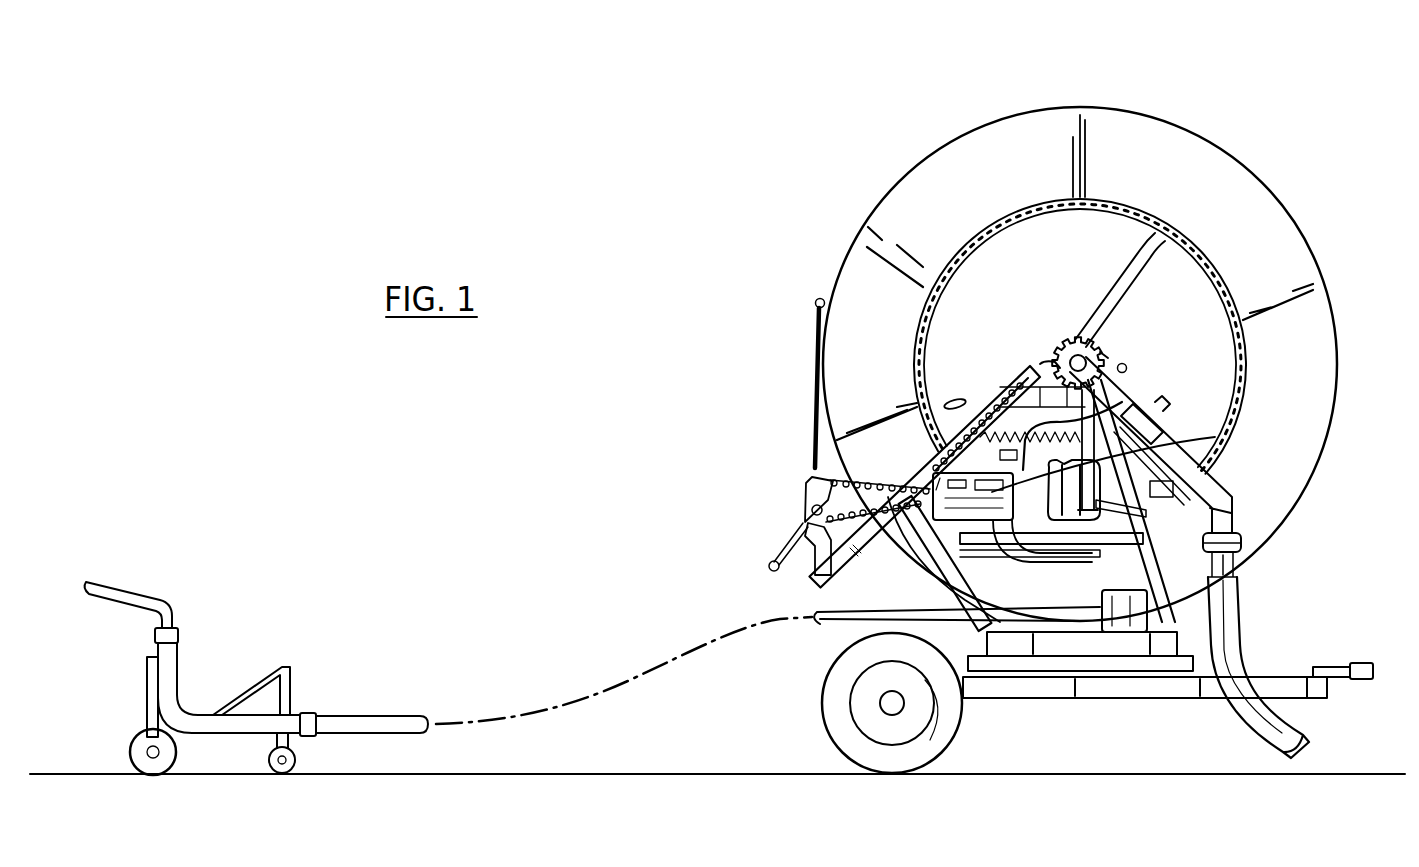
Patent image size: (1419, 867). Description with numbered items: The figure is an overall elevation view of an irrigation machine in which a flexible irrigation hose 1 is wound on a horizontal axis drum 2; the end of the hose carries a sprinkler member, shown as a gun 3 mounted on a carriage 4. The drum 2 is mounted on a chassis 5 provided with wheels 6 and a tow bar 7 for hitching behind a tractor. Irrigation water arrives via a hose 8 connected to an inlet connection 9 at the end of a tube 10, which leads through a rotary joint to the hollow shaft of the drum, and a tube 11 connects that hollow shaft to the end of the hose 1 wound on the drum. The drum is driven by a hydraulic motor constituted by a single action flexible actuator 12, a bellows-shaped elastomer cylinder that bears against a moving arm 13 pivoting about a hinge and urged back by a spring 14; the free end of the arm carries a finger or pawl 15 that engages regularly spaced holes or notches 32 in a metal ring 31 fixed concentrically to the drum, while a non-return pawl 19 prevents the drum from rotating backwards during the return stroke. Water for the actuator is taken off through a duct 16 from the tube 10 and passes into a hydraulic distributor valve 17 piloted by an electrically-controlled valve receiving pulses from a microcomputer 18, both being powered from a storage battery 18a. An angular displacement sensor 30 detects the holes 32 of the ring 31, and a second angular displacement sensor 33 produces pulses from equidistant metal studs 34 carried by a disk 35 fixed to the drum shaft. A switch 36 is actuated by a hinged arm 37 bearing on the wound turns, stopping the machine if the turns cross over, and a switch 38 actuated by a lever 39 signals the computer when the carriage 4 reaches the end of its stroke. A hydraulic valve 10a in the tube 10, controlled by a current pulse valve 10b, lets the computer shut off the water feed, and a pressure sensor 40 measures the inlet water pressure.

The flexible irrigation hose 1 is at (354, 720).
The horizontal axis drum 2 is at (1065, 130).
The gun 3 is at (137, 596).
The carriage 4 is at (150, 695).
The chassis 5 is at (1085, 690).
The wheels 6 is at (946, 736).
The tow bar 7 is at (1360, 680).
The hose 8 is at (1250, 726).
The inlet connection 9 is at (1241, 548).
The tube 10 is at (1212, 491).
The hydraulic valve 10a is at (1155, 419).
The current pulse valve 10b is at (1164, 398).
The tube 11 is at (1135, 277).
The single action flexible actuator 12 is at (1080, 540).
The moving arm 13 is at (1167, 451).
The spring 14 is at (1000, 386).
The finger or pawl 15 is at (1135, 515).
The duct 16 is at (1069, 352).
The hydraulic distributor valve 17 is at (1035, 530).
The microcomputer 18 is at (930, 546).
The storage battery 18a is at (1125, 634).
The non-return pawl 19 is at (1163, 496).
The angular displacement sensor 30 is at (947, 398).
The metal ring 31 is at (1000, 227).
The holes or notches 32 is at (960, 260).
The second angular displacement sensor 33 is at (1043, 362).
The metal studs 34 is at (1080, 336).
The disk 35 is at (1108, 358).
The switch 36 is at (810, 488).
The hinged arm 37 is at (815, 353).
The switch 38 is at (801, 564).
The lever 39 is at (775, 560).
The pressure sensor 40 is at (1128, 367).